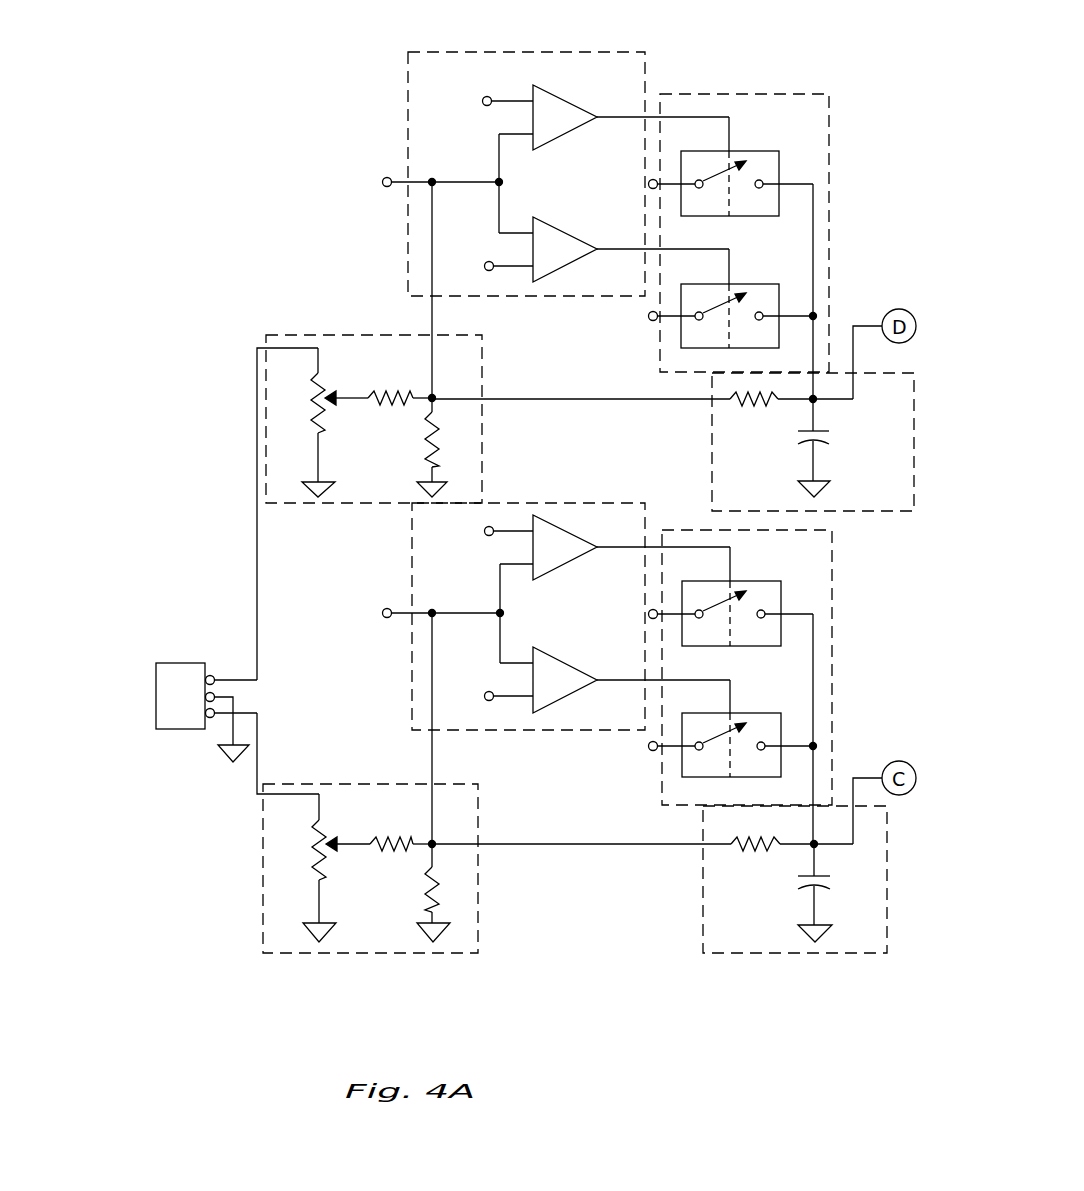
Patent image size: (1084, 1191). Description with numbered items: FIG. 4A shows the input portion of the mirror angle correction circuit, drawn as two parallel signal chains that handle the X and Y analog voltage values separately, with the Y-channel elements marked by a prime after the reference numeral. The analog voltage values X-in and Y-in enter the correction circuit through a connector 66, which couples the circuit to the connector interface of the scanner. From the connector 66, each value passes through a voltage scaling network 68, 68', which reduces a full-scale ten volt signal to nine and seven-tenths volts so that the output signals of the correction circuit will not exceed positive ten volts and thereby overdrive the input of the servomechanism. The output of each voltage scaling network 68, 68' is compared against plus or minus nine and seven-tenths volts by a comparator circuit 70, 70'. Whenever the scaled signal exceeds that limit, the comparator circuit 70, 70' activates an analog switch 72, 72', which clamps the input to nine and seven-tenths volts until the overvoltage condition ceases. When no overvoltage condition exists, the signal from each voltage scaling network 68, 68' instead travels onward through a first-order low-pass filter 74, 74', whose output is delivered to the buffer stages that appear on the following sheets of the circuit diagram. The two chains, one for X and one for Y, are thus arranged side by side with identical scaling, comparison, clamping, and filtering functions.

The connector 66 is at (155, 729).
The voltage scaling network 68 is at (404, 881).
The voltage scaling network 68' is at (419, 419).
The comparator circuit 70 is at (538, 653).
The comparator circuit 70' is at (537, 156).
The analog switch 72 is at (748, 687).
The analog switch 72' is at (732, 205).
The first-order low-pass filter 74 is at (795, 908).
The first-order low-pass filter 74' is at (817, 449).